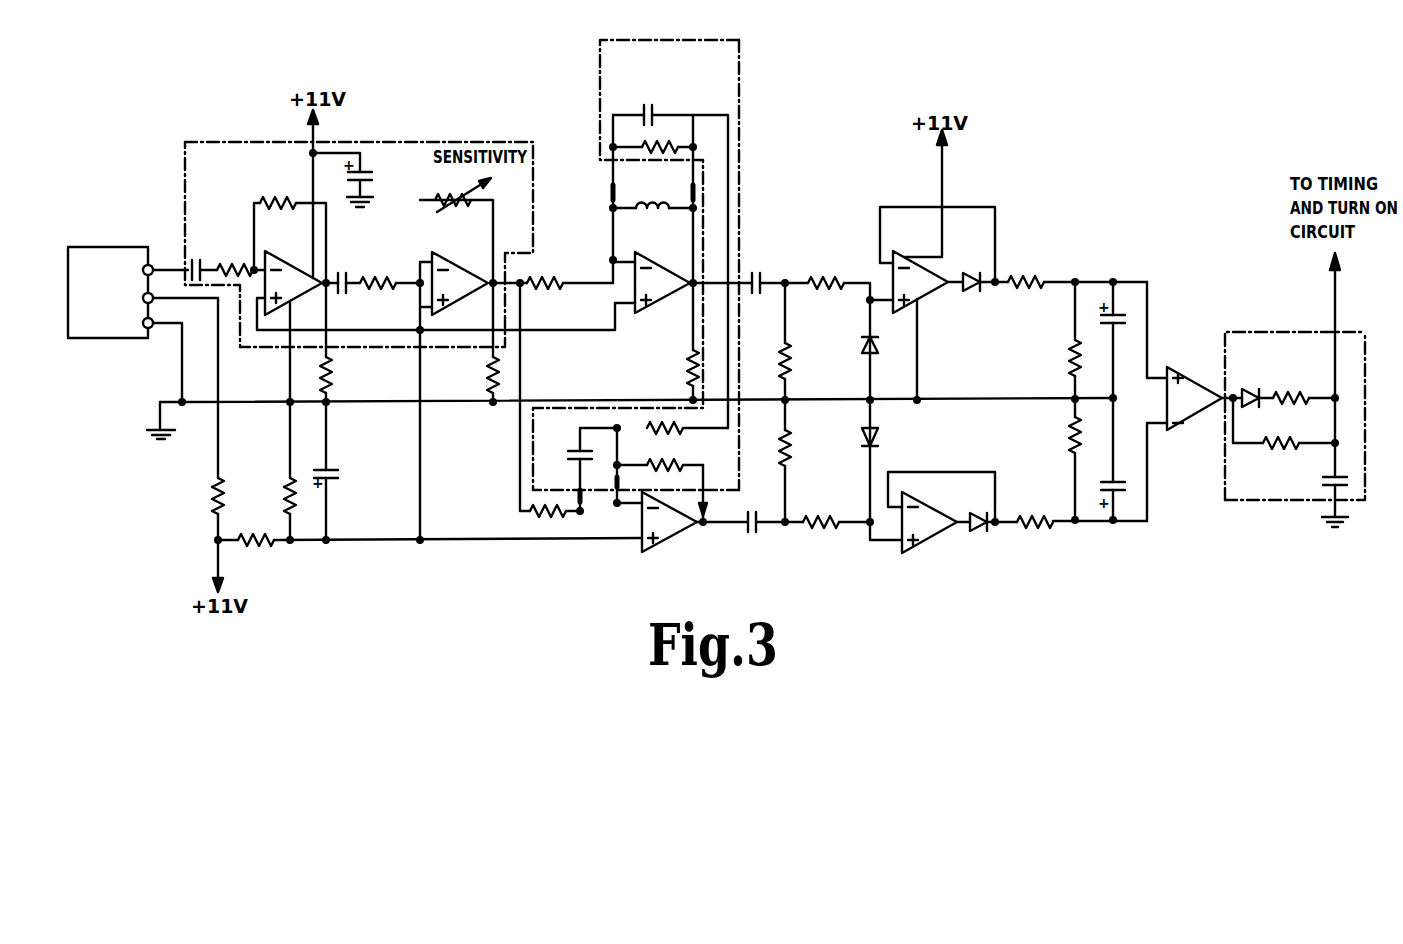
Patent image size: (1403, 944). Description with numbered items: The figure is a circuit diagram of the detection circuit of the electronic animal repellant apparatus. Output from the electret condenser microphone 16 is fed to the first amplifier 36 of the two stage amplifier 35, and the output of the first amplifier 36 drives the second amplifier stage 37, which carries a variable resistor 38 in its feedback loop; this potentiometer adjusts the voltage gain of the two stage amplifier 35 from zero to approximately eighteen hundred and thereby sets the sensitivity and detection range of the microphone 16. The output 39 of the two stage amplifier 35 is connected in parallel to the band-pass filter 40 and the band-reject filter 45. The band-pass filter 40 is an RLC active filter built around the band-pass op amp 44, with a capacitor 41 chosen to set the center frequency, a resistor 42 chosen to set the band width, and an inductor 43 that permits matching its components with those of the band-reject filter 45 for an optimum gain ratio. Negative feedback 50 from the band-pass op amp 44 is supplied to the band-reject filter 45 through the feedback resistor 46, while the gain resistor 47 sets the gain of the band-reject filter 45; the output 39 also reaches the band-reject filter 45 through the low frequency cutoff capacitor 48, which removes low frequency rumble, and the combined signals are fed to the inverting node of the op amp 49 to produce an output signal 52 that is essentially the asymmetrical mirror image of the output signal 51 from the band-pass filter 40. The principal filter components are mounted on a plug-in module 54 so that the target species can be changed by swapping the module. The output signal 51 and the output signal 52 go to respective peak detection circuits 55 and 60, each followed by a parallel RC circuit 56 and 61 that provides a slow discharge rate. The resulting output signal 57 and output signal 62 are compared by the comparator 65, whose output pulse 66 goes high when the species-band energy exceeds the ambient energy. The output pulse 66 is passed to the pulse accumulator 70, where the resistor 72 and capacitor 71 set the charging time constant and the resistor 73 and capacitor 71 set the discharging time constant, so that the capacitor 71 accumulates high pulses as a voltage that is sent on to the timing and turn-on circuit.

The microphone 16 is at (135, 247).
The two stage amplifier 35 is at (233, 140).
The first amplifier 36 is at (294, 264).
The second amplifier stage 37 is at (420, 262).
The variable resistor 38 is at (463, 202).
The output 39 is at (522, 288).
The band-pass filter 40 is at (597, 260).
The capacitor 41 is at (655, 113).
The resistor 42 is at (666, 133).
The inductor 43 is at (658, 210).
The band-pass op amp 44 is at (655, 305).
The band-reject filter 45 is at (705, 533).
The feedback resistor 46 is at (680, 430).
The gain resistor 47 is at (648, 463).
The low frequency cutoff capacitor 48 is at (575, 447).
The op amp 49 is at (667, 543).
The negative feedback 50 is at (739, 193).
The output signal 51 is at (747, 277).
The output signal 52 is at (725, 522).
The plug-in module 54 is at (680, 40).
The peak detection circuit 55 is at (1003, 227).
The parallel RC circuit 56 is at (1062, 357).
The output signal 57 is at (1147, 303).
The peak detection circuit 60 is at (933, 547).
The parallel RC circuit 61 is at (1062, 455).
The output signal 62 is at (1130, 520).
The comparator 65 is at (1200, 378).
The output pulse 66 is at (1225, 342).
The pulse accumulator 70 is at (1230, 502).
The capacitor 71 is at (1343, 473).
The resistor 72 is at (1290, 403).
The resistor 73 is at (1252, 450).